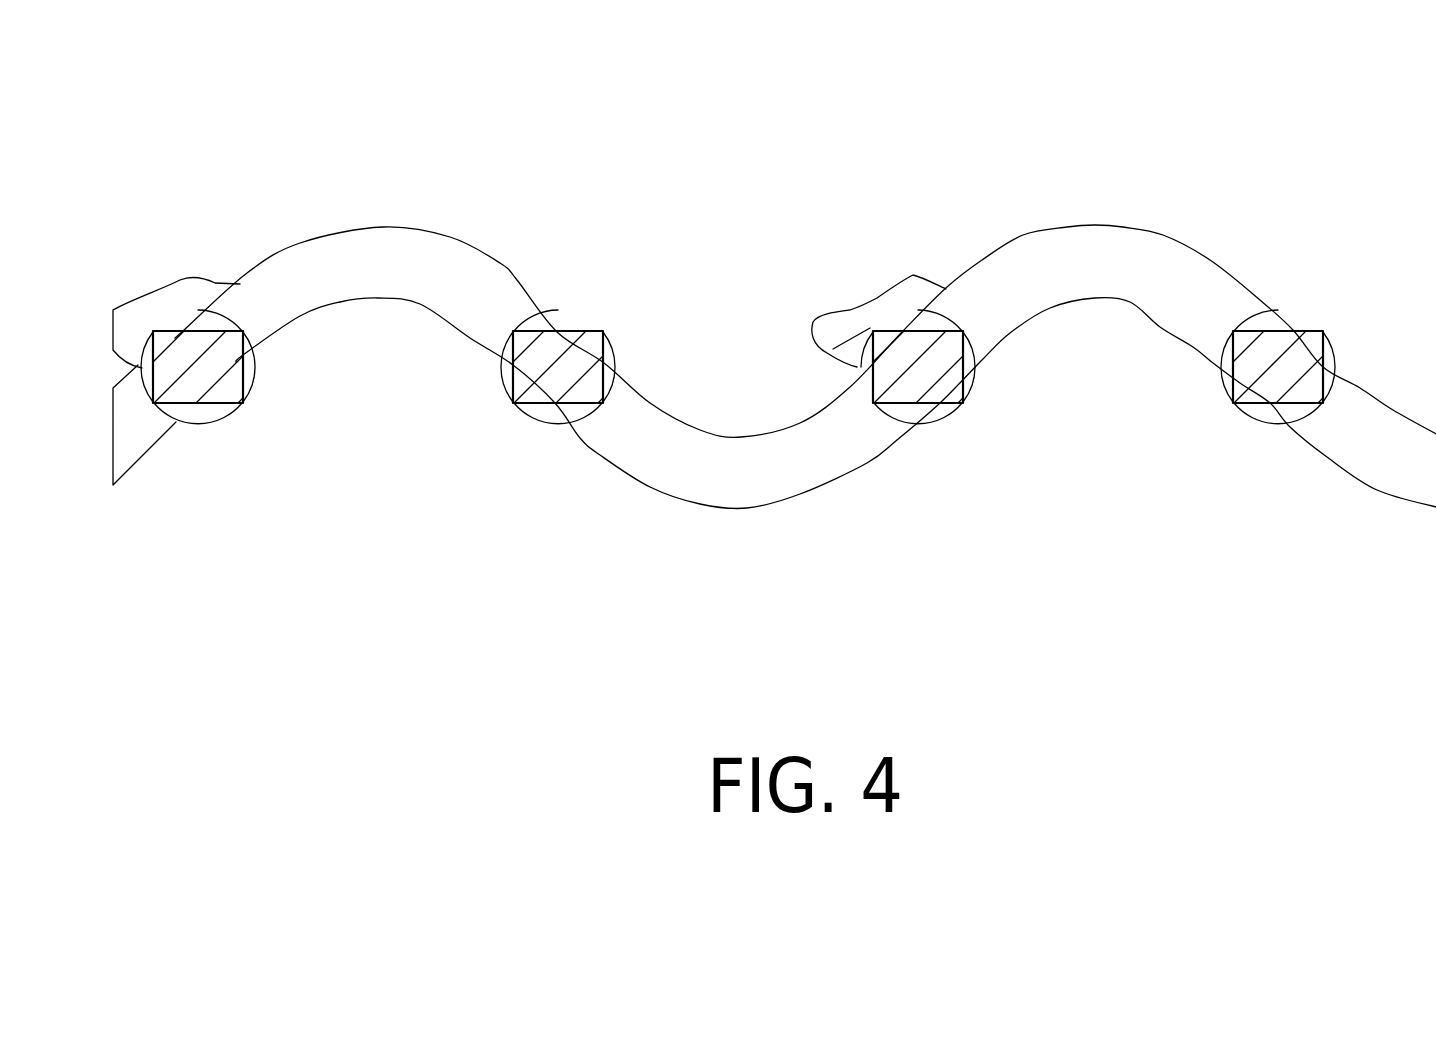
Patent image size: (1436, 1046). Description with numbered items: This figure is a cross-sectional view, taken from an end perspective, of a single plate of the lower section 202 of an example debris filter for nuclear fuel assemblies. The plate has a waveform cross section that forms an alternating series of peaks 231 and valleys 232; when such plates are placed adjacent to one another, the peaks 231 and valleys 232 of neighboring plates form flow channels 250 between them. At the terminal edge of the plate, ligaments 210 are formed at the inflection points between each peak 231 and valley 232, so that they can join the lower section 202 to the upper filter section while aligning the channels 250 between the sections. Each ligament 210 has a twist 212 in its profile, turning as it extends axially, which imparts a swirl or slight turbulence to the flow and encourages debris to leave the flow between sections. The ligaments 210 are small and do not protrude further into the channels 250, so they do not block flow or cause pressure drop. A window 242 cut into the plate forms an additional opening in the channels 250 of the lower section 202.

The lower section 202 is at (805, 366).
The peak 231 is at (388, 227).
The valley 232 is at (733, 507).
The ligament 210 is at (536, 370).
The twist 212 is at (548, 324).
The window 242 is at (882, 303).
The channel 250 is at (1100, 393).